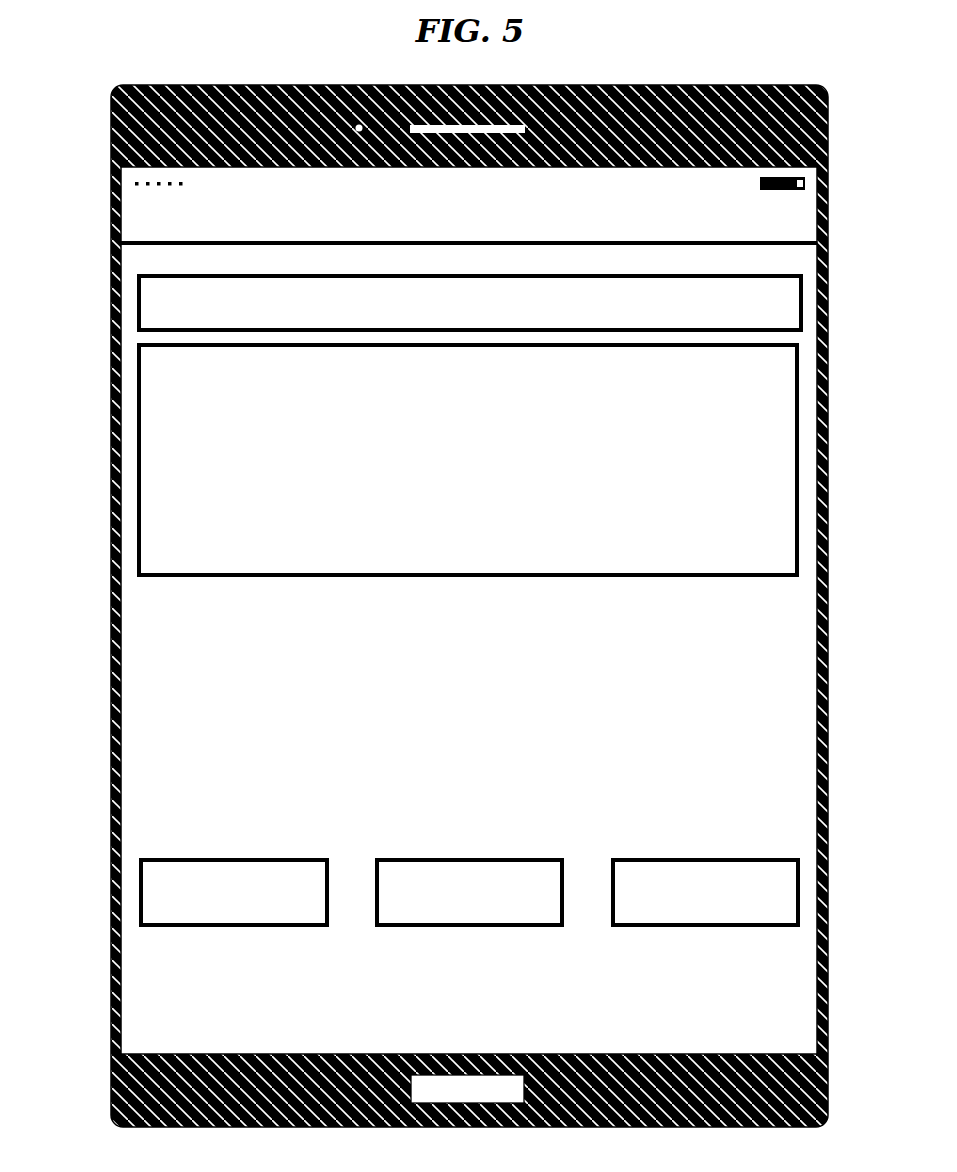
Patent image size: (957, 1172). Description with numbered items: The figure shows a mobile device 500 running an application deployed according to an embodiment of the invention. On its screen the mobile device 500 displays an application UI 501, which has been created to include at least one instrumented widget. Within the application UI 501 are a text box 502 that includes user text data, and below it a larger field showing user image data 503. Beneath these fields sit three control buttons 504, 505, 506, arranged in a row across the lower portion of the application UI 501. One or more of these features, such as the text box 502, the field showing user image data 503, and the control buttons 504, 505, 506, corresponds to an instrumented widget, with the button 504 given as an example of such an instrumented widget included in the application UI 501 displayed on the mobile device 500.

The mobile device 500 is at (147, 86).
The application UI 501 is at (148, 223).
The text box 502 is at (137, 303).
The field showing user image data 503 is at (137, 423).
The control button 504 is at (164, 858).
The control button 505 is at (439, 858).
The control button 506 is at (760, 858).